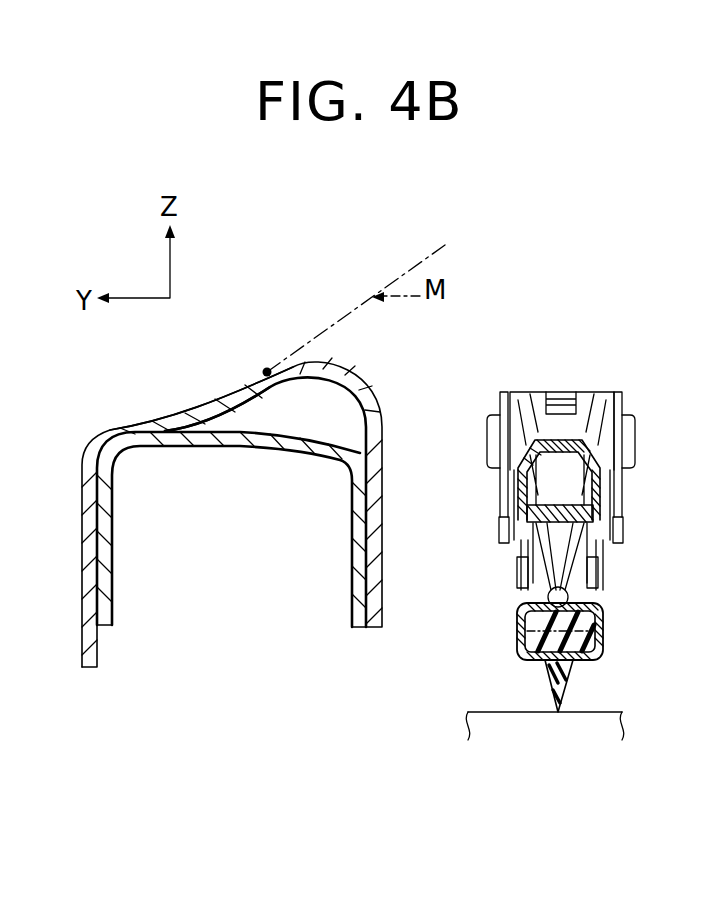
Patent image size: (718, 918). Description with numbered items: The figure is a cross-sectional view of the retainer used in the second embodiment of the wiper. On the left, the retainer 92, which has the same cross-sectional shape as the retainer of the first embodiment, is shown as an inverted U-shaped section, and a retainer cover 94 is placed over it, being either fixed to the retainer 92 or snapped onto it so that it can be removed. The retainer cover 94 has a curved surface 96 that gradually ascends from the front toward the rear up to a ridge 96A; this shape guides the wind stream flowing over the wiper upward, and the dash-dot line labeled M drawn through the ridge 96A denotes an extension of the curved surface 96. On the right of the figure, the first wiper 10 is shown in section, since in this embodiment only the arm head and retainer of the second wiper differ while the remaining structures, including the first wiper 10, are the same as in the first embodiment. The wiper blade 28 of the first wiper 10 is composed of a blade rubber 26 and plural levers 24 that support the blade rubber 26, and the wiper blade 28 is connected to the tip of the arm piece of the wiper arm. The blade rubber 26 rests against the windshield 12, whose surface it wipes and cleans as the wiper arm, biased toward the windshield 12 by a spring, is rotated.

The first wiper 10 is at (593, 500).
The windshield 12 is at (480, 711).
The levers 24 is at (568, 493).
The blade rubber 26 is at (568, 690).
The wiper blade 28 is at (634, 560).
The retainer 92 is at (327, 428).
The retainer cover 94 is at (384, 516).
The curved surface 96 is at (213, 407).
The ridge 96A is at (267, 368).